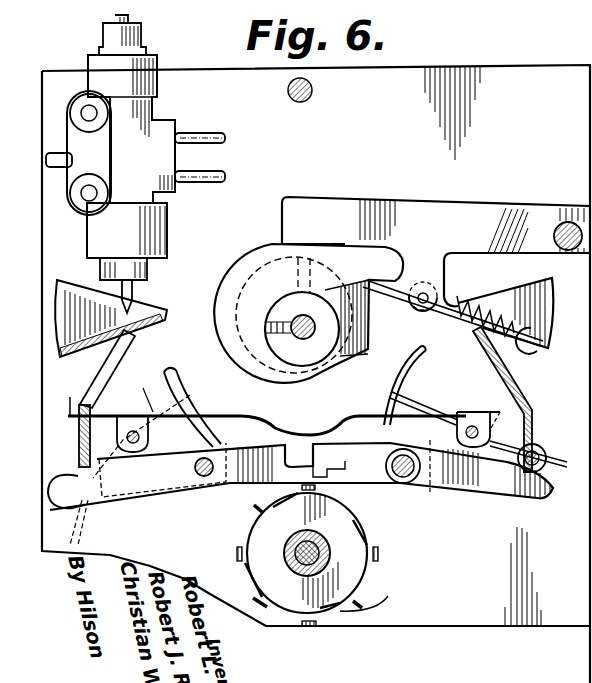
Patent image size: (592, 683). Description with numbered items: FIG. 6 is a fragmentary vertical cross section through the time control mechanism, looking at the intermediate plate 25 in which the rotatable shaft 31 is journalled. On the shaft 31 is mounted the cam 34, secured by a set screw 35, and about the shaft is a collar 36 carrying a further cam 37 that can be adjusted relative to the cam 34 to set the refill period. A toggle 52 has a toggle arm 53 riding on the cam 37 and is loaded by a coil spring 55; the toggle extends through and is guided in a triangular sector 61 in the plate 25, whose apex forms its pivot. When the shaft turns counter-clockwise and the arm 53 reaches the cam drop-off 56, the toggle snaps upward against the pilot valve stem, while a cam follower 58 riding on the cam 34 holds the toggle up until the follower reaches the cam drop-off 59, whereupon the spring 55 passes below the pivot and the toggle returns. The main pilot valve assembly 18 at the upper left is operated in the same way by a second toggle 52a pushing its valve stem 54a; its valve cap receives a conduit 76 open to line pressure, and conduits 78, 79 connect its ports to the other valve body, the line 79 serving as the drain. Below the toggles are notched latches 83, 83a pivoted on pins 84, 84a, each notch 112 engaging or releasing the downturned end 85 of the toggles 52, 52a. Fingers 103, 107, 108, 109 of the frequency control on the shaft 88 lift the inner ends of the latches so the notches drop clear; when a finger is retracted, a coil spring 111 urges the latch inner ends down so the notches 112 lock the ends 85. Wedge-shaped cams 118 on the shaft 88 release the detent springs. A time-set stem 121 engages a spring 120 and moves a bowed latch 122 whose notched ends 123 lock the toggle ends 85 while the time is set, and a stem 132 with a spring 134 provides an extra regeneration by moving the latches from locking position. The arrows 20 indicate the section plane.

The main pilot valve assembly 18 is at (155, 113).
The section line 20 is at (300, 185).
The intermediate plate 25 is at (316, 374).
The rotatable shaft 31 is at (303, 340).
The cam 34 is at (242, 276).
The set screw 35 is at (294, 315).
The collar or sleeve 36 is at (328, 348).
The cam 37 is at (377, 327).
The toggle 52 is at (492, 358).
The toggle 52a is at (133, 347).
The toggle arm 53 is at (446, 318).
The valve stem 54a is at (143, 291).
The coil spring 55 is at (457, 300).
The cam drop-off 56 is at (367, 353).
The cam follower 58 is at (425, 200).
The cam drop-off 59 is at (385, 272).
The triangular slot or sector 61 is at (545, 333).
The conduit 76 is at (130, 18).
The conduit 78 is at (208, 133).
The drain line 79 is at (213, 172).
The notched latch 83 is at (233, 485).
The notched latch 83a is at (454, 486).
The pin 84 is at (200, 477).
The pin 84a is at (404, 488).
The downturned end 85 is at (79, 457).
The shaft 88 is at (330, 558).
The finger 103 is at (237, 553).
The finger 107 is at (372, 585).
The finger 108 is at (412, 477).
The finger 109 is at (253, 603).
The coil spring 111 is at (440, 437).
The notch 112 is at (88, 504).
The wedge-shaped cam 118 is at (382, 606).
The spring 120 is at (492, 432).
The stem 121 is at (474, 448).
The bowed latch 122 is at (277, 428).
The notched end 123 is at (548, 385).
The stem 132 is at (132, 433).
The spring 134 is at (157, 422).